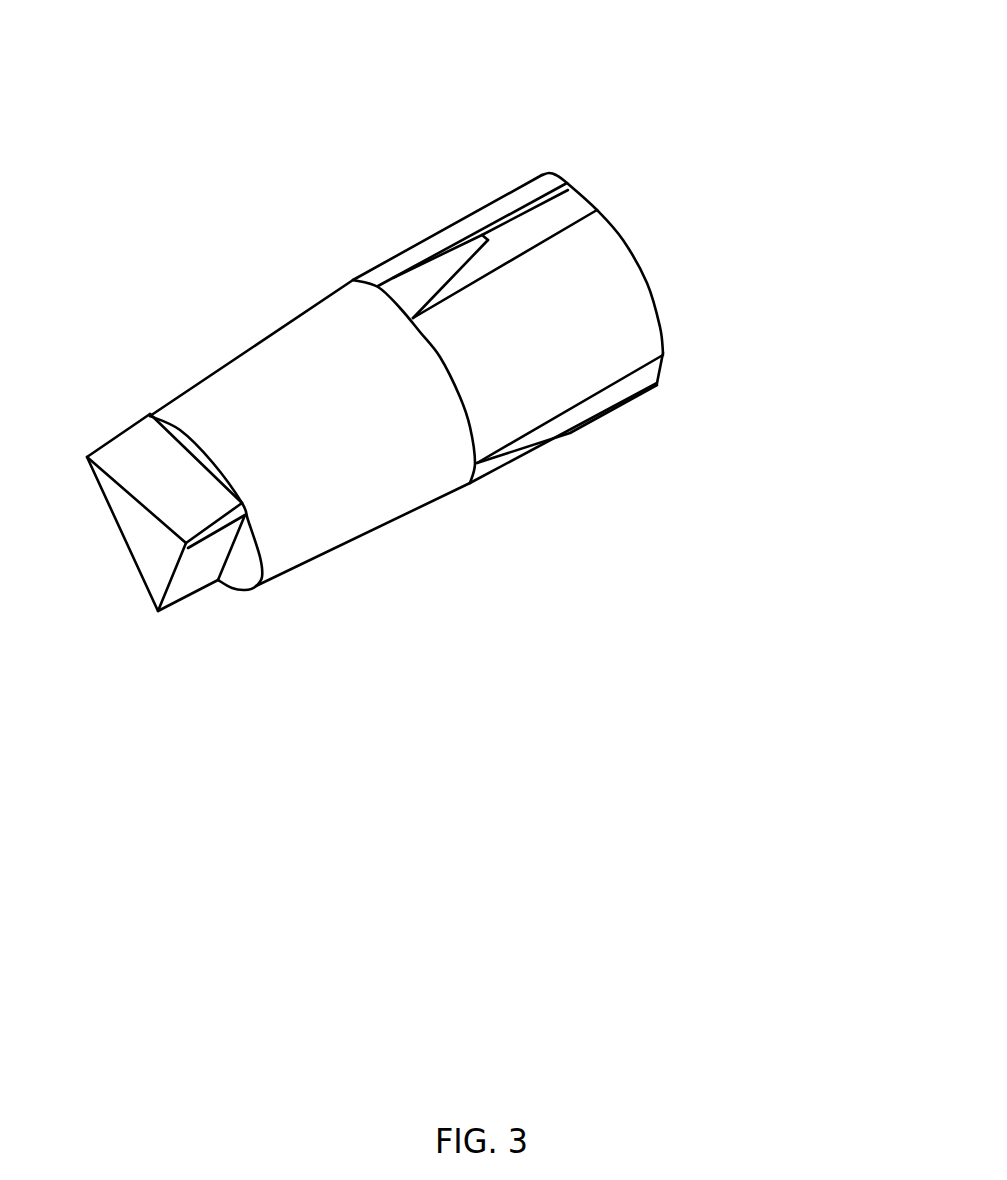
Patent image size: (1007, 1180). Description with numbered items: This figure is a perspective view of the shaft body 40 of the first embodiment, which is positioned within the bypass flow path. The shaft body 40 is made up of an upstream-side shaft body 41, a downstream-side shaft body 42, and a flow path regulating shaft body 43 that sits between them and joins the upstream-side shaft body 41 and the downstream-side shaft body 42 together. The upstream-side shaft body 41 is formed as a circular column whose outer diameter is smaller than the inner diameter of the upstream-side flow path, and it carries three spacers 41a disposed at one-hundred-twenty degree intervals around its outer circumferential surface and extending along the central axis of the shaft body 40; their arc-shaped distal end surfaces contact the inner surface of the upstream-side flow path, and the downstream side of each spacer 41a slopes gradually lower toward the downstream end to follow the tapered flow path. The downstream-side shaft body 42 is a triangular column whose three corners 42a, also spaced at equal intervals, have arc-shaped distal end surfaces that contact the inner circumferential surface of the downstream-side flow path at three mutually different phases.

The shaft body 40 is at (727, 165).
The upstream-side shaft body 41 is at (630, 288).
The spacer 41a is at (530, 208).
The downstream-side shaft body 42 is at (153, 553).
The corner 42a is at (117, 430).
The flow path regulating shaft body 43 is at (405, 490).